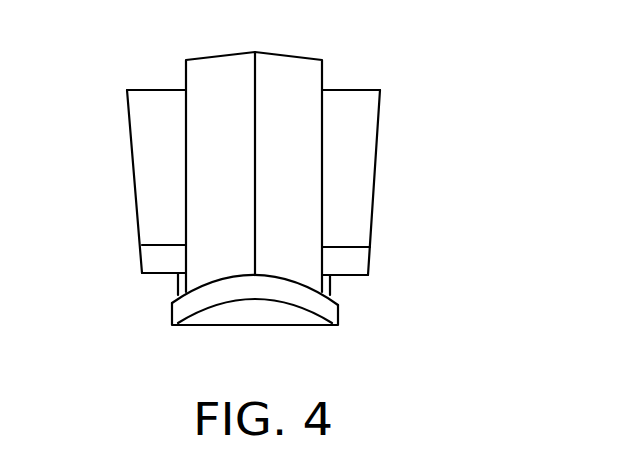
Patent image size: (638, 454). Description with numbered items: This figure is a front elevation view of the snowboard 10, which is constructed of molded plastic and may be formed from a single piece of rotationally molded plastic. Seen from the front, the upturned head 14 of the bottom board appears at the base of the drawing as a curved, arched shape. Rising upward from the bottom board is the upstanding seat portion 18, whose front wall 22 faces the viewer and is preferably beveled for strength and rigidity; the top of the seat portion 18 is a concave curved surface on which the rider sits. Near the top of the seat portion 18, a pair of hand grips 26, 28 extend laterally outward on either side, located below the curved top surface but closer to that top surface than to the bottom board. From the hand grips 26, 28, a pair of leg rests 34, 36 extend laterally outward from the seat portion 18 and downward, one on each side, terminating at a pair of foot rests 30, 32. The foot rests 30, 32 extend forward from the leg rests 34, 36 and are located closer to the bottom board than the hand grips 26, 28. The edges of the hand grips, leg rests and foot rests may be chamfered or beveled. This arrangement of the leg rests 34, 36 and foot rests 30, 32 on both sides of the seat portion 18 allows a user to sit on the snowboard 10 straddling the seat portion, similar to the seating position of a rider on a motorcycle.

The snowboard 10 is at (457, 226).
The upturned head 14 is at (287, 320).
The seat portion 18 is at (297, 113).
The front wall 22 is at (200, 207).
The hand grip 26 is at (370, 90).
The hand grip 28 is at (143, 88).
The foot rest 30 is at (352, 265).
The foot rest 32 is at (150, 270).
The leg rest 34 is at (365, 155).
The leg rest 36 is at (145, 152).